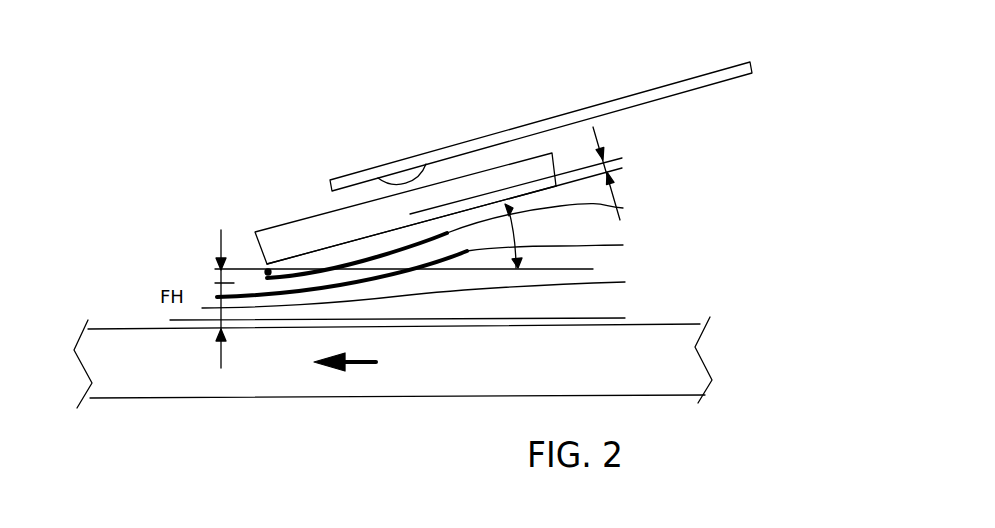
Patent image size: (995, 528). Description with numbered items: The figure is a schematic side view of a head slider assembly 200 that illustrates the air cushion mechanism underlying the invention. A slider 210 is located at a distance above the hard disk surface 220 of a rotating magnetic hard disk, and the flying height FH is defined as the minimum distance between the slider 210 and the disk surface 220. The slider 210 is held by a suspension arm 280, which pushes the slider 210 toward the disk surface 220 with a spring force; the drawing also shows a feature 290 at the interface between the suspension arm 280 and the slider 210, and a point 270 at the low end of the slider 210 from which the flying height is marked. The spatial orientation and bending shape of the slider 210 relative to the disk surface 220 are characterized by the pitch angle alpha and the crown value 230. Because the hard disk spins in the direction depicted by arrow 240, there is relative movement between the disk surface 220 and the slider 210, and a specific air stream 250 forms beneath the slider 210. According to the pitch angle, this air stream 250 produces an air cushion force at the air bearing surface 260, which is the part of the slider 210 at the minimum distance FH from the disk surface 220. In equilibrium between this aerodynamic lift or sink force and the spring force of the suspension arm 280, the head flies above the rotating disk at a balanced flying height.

The head slider assembly 200 is at (203, 150).
The slider 210 is at (280, 242).
The hard disk surface 220 is at (683, 320).
The crown value 230 is at (630, 163).
The arrow 240 is at (351, 366).
The air stream 250 is at (612, 278).
The air bearing surface 260 is at (360, 233).
The trailing edge 270 is at (215, 237).
The suspension arm 280 is at (666, 93).
The dimple 290 is at (400, 178).